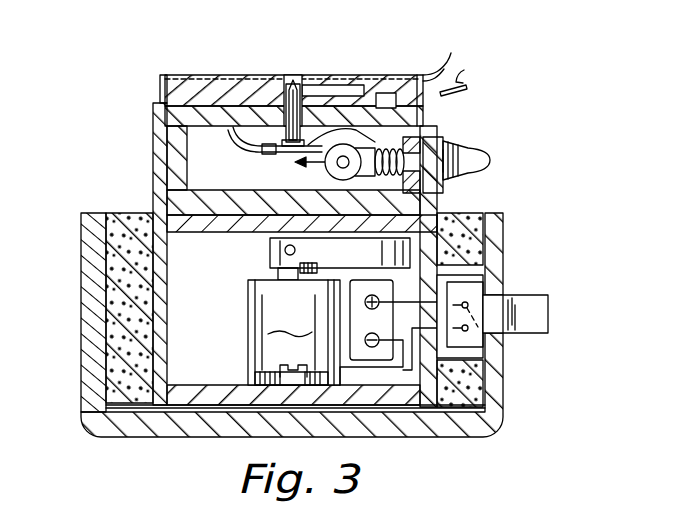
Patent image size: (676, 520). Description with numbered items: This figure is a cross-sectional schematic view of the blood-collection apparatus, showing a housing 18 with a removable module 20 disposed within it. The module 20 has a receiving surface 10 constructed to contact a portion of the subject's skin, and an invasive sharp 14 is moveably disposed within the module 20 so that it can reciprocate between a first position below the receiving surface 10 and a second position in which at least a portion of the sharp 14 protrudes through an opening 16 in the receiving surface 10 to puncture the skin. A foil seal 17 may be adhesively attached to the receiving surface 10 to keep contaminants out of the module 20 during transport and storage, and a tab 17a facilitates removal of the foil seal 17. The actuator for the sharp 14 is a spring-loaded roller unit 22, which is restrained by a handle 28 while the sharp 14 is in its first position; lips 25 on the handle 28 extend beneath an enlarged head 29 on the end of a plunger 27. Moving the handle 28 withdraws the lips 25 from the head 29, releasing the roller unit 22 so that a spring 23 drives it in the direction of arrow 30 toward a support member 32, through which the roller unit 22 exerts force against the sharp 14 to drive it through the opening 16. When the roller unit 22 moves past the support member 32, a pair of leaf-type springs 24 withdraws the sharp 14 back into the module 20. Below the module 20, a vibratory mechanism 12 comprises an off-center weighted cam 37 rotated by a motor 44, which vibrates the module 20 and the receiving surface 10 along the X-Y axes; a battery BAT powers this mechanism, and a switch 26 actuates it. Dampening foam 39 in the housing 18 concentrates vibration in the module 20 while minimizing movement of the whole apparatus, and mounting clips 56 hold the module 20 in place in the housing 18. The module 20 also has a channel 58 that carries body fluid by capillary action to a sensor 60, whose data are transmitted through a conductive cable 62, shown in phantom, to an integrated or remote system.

The receiving surface 10 is at (208, 85).
The vibratory mechanism 12 is at (238, 315).
The invasive sharp 14 is at (273, 76).
The opening 16 is at (294, 76).
The foil seal 17 is at (365, 73).
The tab 17a is at (451, 55).
The housing 18 is at (505, 225).
The removable module 20 is at (432, 110).
The roller unit 22 is at (430, 118).
The spring 23 is at (430, 192).
The leaf-type springs 24 is at (247, 143).
The lips 25 is at (463, 150).
The switch 26 is at (550, 307).
The plunger 27 is at (430, 138).
The handle 28 is at (493, 162).
The enlarged head 29 is at (480, 178).
The arrow 30 is at (305, 168).
The support member 32 is at (262, 154).
The off-center weighted cam 37 is at (270, 248).
The dampening foam 39 is at (122, 213).
The motor 44 is at (294, 332).
The mounting clips 56 is at (163, 117).
The channel 58 is at (347, 76).
The sensor 60 is at (390, 93).
The conductive cable 62 is at (462, 67).
The battery pack BAT is at (387, 291).